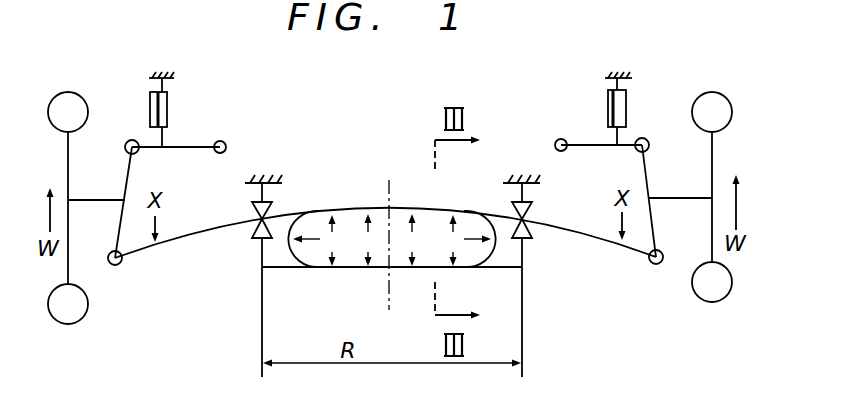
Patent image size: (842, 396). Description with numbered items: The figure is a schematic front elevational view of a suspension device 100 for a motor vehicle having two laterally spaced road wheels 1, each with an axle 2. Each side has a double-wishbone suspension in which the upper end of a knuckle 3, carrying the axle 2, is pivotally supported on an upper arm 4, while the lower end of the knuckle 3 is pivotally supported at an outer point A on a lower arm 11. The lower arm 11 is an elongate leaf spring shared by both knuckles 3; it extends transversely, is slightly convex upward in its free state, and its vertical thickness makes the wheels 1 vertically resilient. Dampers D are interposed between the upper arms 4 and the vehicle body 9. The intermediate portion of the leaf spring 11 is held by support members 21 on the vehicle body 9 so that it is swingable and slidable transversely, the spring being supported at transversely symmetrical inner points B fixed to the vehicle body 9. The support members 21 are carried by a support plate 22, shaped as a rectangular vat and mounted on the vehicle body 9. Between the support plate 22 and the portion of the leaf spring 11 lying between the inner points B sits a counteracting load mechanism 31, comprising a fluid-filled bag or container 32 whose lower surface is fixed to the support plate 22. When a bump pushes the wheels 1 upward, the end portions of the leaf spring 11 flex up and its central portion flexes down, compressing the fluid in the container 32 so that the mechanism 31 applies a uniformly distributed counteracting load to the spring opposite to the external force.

The suspension device 100 is at (547, 48).
The road wheel 1 is at (66, 92).
The axle 2 is at (97, 198).
The knuckle 3 is at (129, 141).
The upper arm 4 is at (190, 150).
The vehicle body 9 is at (265, 178).
The lower arm 11 is at (487, 212).
The support member 21 is at (256, 237).
The support plate 22 is at (288, 268).
The counteracting load mechanism 31 is at (354, 226).
The container 32 is at (494, 268).
The damper D is at (168, 105).
The outer supporting point A is at (116, 266).
The inner supporting point B is at (261, 218).